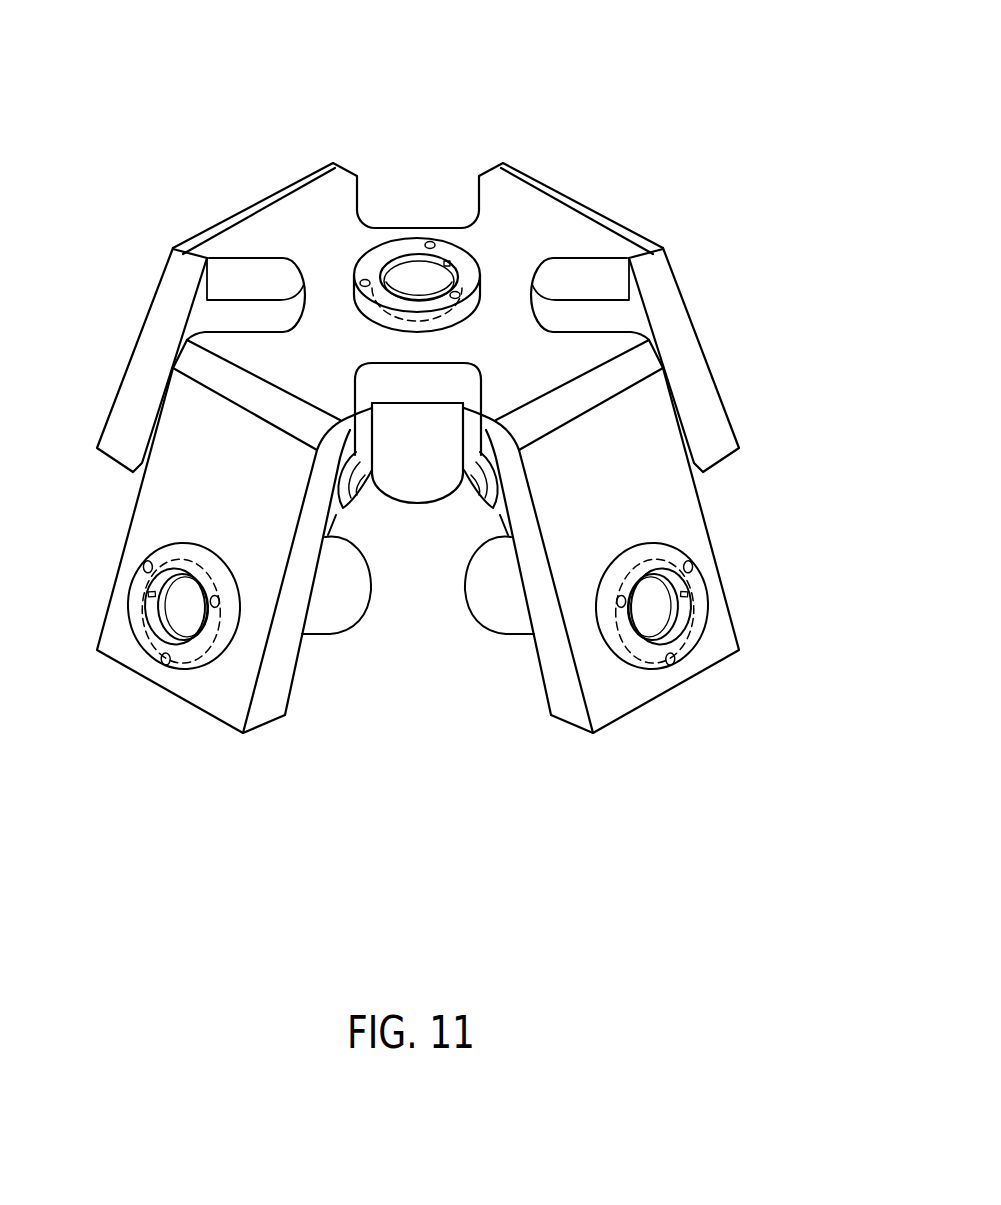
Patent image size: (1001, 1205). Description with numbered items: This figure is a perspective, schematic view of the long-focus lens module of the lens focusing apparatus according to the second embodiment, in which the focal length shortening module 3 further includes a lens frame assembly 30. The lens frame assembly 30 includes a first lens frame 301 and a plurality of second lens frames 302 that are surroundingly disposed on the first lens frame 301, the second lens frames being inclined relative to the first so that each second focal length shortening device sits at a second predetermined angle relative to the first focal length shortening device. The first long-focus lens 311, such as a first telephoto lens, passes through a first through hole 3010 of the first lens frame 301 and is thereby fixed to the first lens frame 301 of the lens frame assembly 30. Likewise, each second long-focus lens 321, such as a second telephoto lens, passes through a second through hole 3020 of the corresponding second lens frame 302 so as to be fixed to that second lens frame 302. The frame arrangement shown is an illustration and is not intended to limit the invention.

The focal length shortening module 3 is at (416, 418).
The lens frame assembly 30 is at (735, 108).
The first lens frame 301 is at (545, 218).
The second lens frames 302 is at (673, 320).
The first through hole 3010 is at (413, 268).
The second through hole 3020 is at (182, 662).
The first long-focus lens 311 is at (412, 470).
The second long-focus lens 321 is at (353, 503).